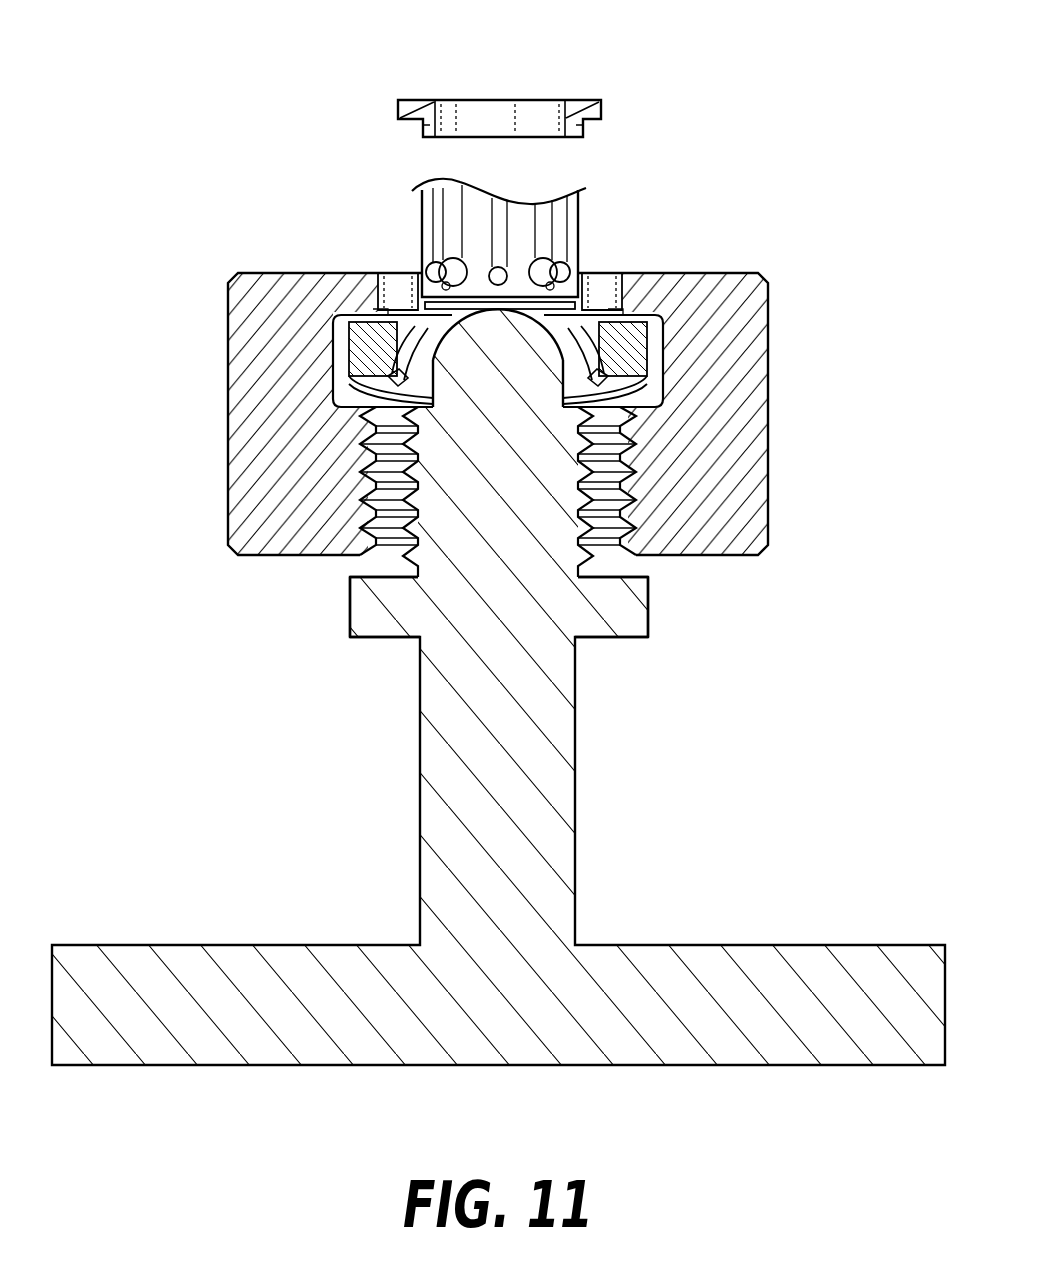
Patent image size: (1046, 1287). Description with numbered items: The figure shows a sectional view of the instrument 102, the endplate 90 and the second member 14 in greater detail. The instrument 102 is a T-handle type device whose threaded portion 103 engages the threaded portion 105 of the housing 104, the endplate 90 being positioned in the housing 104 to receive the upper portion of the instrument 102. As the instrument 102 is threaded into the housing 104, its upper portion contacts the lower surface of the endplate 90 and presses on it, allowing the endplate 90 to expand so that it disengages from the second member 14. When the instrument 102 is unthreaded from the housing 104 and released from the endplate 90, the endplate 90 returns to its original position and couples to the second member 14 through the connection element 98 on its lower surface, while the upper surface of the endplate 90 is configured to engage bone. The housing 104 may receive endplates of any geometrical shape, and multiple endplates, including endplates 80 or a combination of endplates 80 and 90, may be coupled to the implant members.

The second member 14 is at (527, 223).
The endplate 80 is at (579, 100).
The endplate 90 is at (672, 320).
The connection element 98 is at (580, 310).
The instrument 102 is at (650, 601).
The threaded portion 103 is at (557, 505).
The housing 104 is at (740, 274).
The threaded portion 105 is at (632, 493).